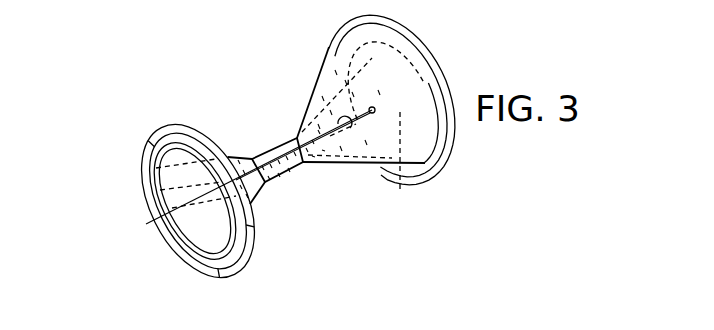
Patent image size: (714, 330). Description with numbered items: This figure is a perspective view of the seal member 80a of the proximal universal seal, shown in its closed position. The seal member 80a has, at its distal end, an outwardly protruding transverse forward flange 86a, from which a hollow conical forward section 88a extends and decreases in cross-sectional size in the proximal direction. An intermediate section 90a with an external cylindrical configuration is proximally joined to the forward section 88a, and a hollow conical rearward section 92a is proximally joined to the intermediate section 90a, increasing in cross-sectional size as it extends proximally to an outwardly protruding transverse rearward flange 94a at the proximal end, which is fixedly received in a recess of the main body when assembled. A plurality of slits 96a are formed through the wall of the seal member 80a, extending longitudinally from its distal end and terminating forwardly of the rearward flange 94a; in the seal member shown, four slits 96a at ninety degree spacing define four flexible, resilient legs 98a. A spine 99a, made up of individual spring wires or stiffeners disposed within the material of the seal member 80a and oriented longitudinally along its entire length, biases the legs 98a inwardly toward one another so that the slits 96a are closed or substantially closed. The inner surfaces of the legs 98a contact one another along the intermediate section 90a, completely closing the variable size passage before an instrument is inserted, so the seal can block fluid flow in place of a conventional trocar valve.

The seal member 80a is at (113, 163).
The forward flange 86a is at (243, 270).
The forward section 88a is at (257, 204).
The intermediate section 90a is at (283, 170).
The rearward section 92a is at (312, 98).
The rearward flange 94a is at (442, 177).
The slits 96a is at (146, 224).
The legs 98a is at (161, 238).
The spine 99a is at (142, 186).